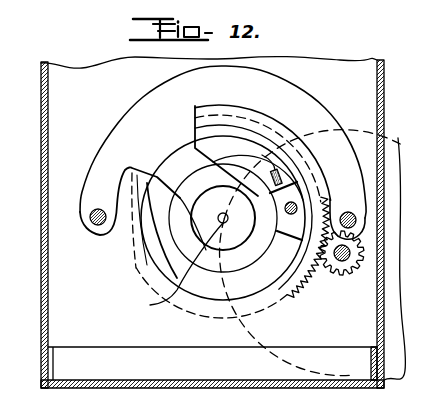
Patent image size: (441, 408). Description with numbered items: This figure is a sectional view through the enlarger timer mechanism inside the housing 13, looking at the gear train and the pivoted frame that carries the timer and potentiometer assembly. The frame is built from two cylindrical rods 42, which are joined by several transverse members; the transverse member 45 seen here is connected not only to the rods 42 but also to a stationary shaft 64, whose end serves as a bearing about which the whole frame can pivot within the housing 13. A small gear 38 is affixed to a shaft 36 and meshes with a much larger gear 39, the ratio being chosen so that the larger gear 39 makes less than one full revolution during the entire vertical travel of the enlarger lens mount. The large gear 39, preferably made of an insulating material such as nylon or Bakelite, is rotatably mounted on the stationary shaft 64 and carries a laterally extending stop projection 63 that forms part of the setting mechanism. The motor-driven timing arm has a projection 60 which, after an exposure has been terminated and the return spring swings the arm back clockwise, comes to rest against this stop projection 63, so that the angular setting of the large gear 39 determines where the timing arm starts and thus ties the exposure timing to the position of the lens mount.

The housing 13 is at (41, 158).
The shaft 36 is at (350, 263).
The gear 38 is at (333, 277).
The larger gear 39 is at (292, 296).
The cylindrical rods 42 is at (98, 226).
The transverse member 45 is at (113, 128).
The projection 60 is at (262, 160).
The stop projection 63 is at (252, 199).
The stationary shaft 64 is at (150, 305).